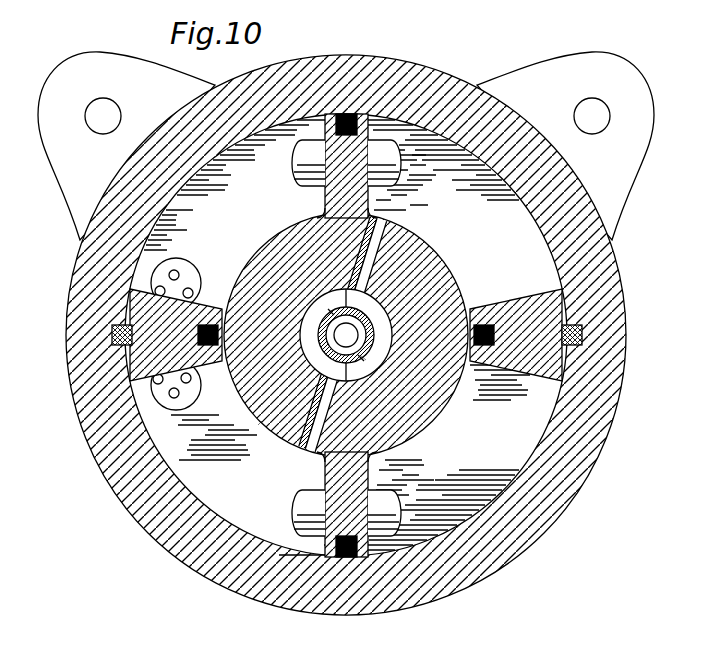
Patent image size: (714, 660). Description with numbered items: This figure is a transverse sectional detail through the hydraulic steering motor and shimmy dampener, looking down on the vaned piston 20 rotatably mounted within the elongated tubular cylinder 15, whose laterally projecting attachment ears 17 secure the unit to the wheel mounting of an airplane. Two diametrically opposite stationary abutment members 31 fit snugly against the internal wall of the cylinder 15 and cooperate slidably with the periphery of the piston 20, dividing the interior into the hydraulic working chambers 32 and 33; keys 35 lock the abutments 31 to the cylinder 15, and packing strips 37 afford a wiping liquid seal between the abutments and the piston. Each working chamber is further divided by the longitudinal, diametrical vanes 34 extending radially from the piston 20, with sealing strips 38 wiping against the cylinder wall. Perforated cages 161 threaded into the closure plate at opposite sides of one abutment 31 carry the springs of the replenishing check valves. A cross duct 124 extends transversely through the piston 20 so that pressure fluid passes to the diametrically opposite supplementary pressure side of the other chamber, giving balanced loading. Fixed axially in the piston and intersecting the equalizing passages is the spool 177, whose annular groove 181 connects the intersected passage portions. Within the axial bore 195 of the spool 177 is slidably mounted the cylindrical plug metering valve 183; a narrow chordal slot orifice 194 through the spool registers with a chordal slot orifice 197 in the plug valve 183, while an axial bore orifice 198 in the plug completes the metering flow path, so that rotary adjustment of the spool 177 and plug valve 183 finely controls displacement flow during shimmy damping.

The tubular cylinder 15 is at (620, 366).
The attachment ears 17 is at (80, 190).
The vaned piston 20 is at (468, 300).
The stationary vanes or abutment members 31 is at (128, 312).
The hydraulic working chamber 32 is at (497, 498).
The hydraulic working chamber 33 is at (447, 152).
The vanes 34 is at (370, 125).
The keys 35 is at (112, 338).
The packing or sealing strips 37 is at (211, 325).
The sealing or packing strips 38 is at (347, 113).
The cross duct 124 is at (412, 442).
The perforated cages 161 is at (186, 275).
The spool 177 is at (322, 320).
The annular groove 181 is at (258, 407).
The displacement-flow metering valve 183 is at (322, 312).
The chordal slot-like orifice 194 is at (447, 290).
The axial bore 195 is at (258, 425).
The chordal-slot orifice 197 is at (376, 356).
The axial bore orifice 198 is at (436, 292).